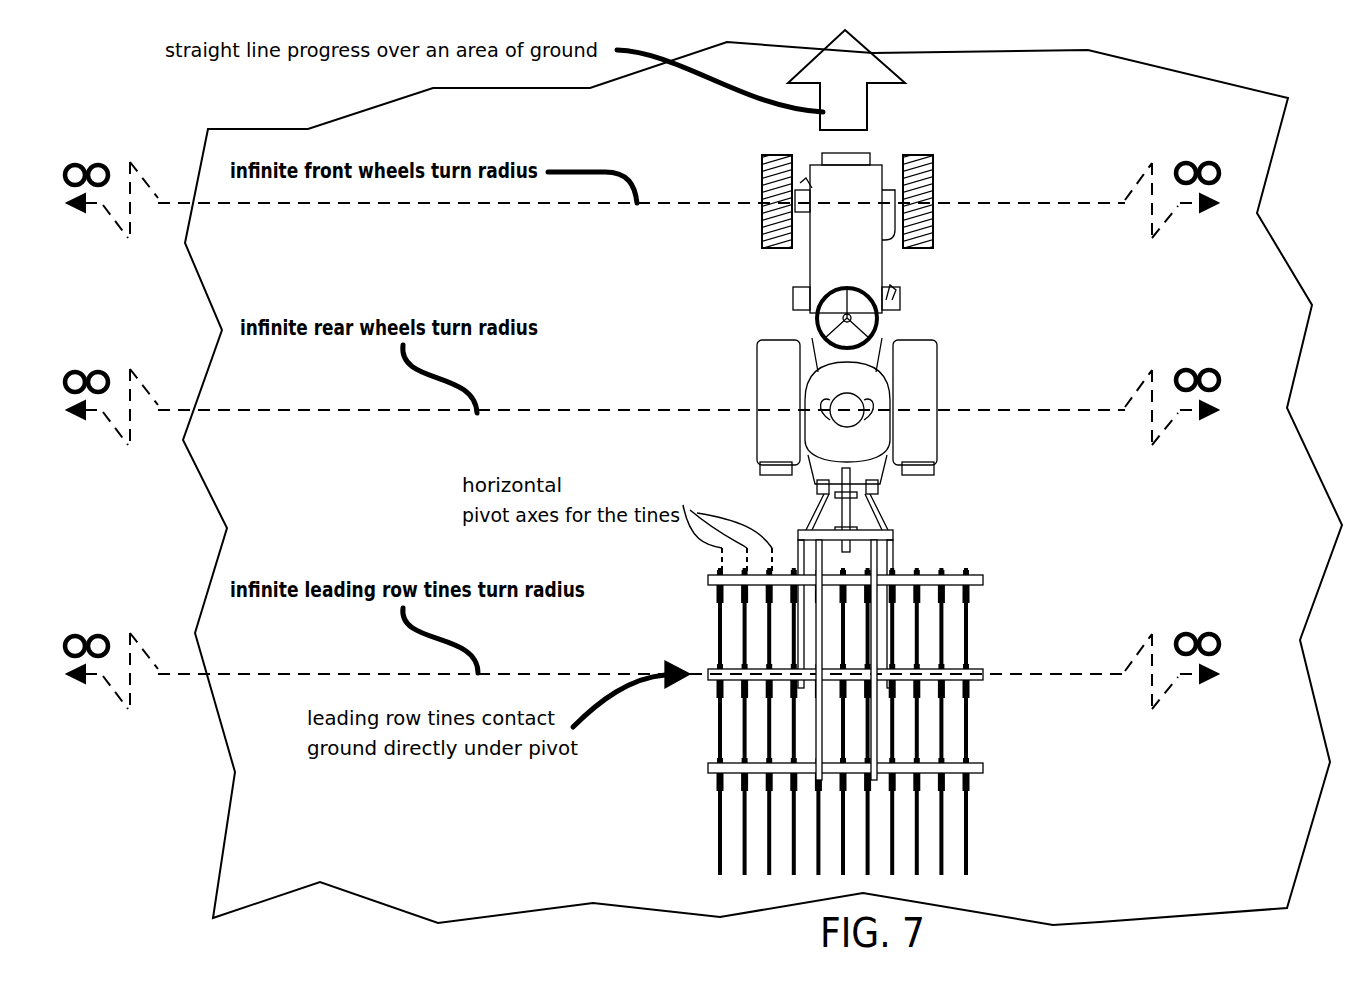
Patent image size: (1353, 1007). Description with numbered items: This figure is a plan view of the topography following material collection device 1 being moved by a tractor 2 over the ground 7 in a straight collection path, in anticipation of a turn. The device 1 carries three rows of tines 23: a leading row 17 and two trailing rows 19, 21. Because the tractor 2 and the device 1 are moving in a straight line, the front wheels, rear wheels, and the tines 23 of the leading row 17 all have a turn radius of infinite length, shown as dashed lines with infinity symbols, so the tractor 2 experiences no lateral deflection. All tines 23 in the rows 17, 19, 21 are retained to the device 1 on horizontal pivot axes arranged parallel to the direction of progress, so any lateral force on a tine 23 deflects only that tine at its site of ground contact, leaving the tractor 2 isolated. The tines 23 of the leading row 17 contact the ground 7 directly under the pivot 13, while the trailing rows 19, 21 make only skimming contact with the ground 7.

The device 1 is at (820, 707).
The tractor 2 is at (858, 252).
The ground 7 is at (1070, 169).
The pivot 13 is at (838, 670).
The leading row 17 is at (1035, 632).
The row 19 is at (871, 674).
The row 21 is at (1035, 835).
The tines 23 is at (943, 631).